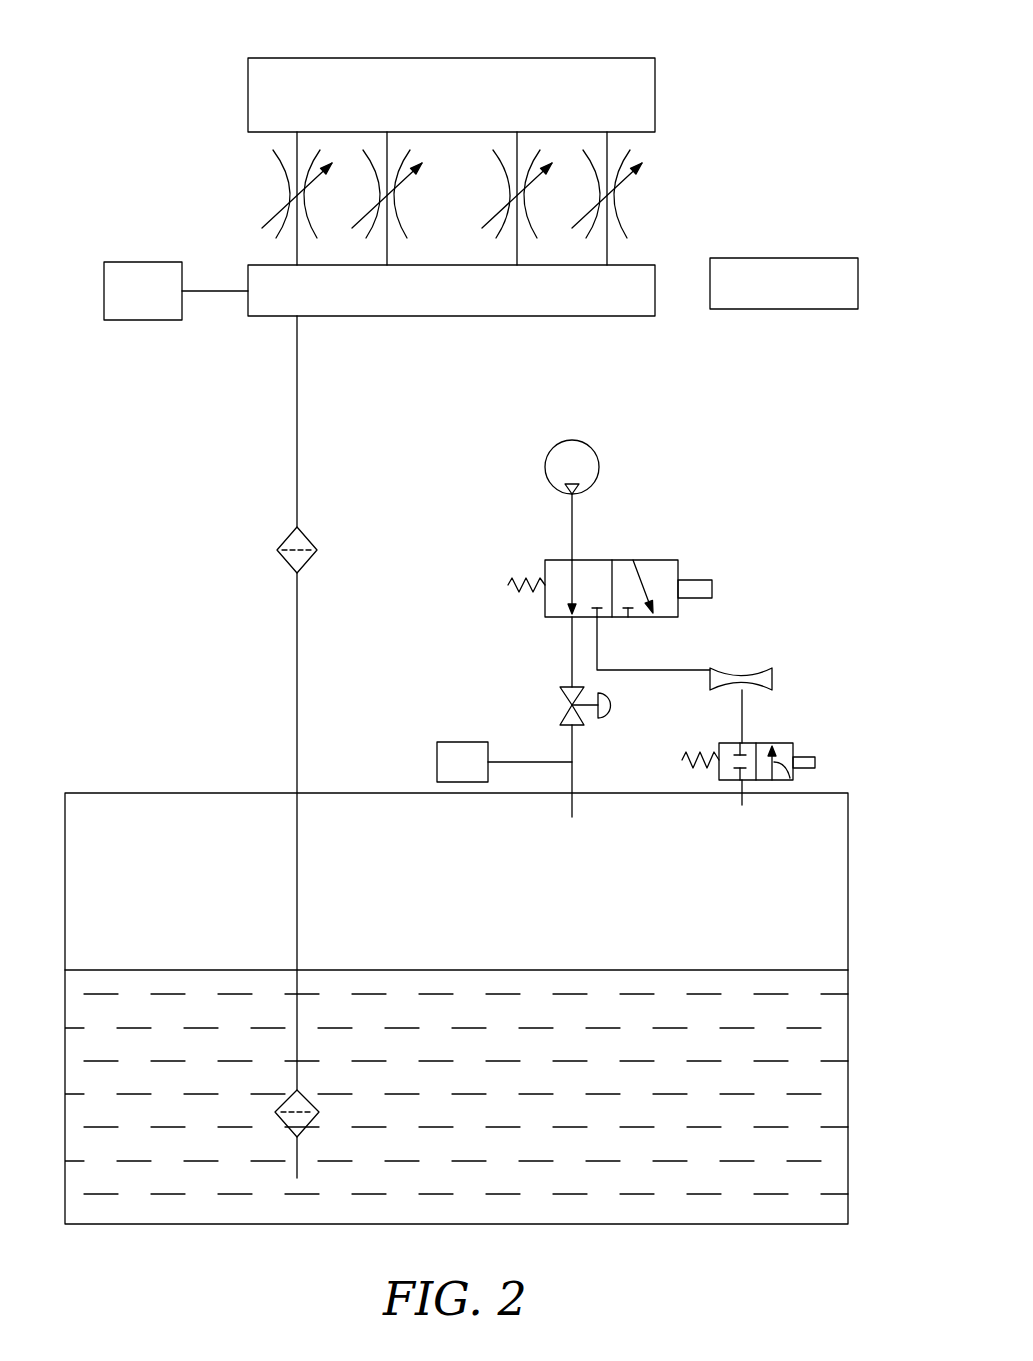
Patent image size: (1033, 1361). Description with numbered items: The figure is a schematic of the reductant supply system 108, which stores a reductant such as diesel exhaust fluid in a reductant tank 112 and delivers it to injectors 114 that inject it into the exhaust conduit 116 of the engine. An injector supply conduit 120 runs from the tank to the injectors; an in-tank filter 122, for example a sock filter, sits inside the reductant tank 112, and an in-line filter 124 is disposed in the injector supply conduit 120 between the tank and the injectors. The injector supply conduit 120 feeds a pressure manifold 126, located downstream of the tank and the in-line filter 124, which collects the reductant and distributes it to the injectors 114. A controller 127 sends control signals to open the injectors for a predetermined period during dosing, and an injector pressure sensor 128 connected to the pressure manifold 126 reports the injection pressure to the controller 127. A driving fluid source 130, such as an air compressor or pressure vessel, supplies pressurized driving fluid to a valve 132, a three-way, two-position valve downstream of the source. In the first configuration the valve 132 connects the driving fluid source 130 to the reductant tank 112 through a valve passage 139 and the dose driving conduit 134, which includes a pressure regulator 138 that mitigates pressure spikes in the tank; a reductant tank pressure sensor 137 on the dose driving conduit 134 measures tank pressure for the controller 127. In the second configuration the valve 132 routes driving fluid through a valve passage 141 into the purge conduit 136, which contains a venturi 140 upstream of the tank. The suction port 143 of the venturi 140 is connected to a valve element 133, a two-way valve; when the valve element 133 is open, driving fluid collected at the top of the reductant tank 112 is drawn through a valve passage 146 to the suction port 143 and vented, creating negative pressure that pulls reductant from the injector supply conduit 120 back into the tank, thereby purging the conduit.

The reductant supply system 108 is at (738, 57).
The reductant tank 112 is at (803, 1224).
The injector 114 is at (243, 170).
The exhaust conduit 116 is at (468, 103).
The injector supply conduit 120 is at (297, 420).
The in-tank filter 122 is at (305, 1094).
The in-line filter 124 is at (290, 565).
The pressure manifold 126 is at (468, 302).
The controller 127 is at (801, 295).
The injector pressure sensor 128 is at (127, 262).
The driving fluid source 130 is at (593, 448).
The valve 132 is at (630, 463).
The valve element 133 is at (774, 557).
The dose driving conduit 134 is at (570, 666).
The purge conduit 136 is at (674, 671).
The reductant tank pressure sensor 137 is at (437, 760).
The pressure regulator 138 is at (611, 705).
The valve passage 139 is at (570, 574).
The venturi 140 is at (741, 675).
The valve passage 141 is at (640, 575).
The suction port 143 is at (745, 690).
The valve passage 146 is at (794, 771).